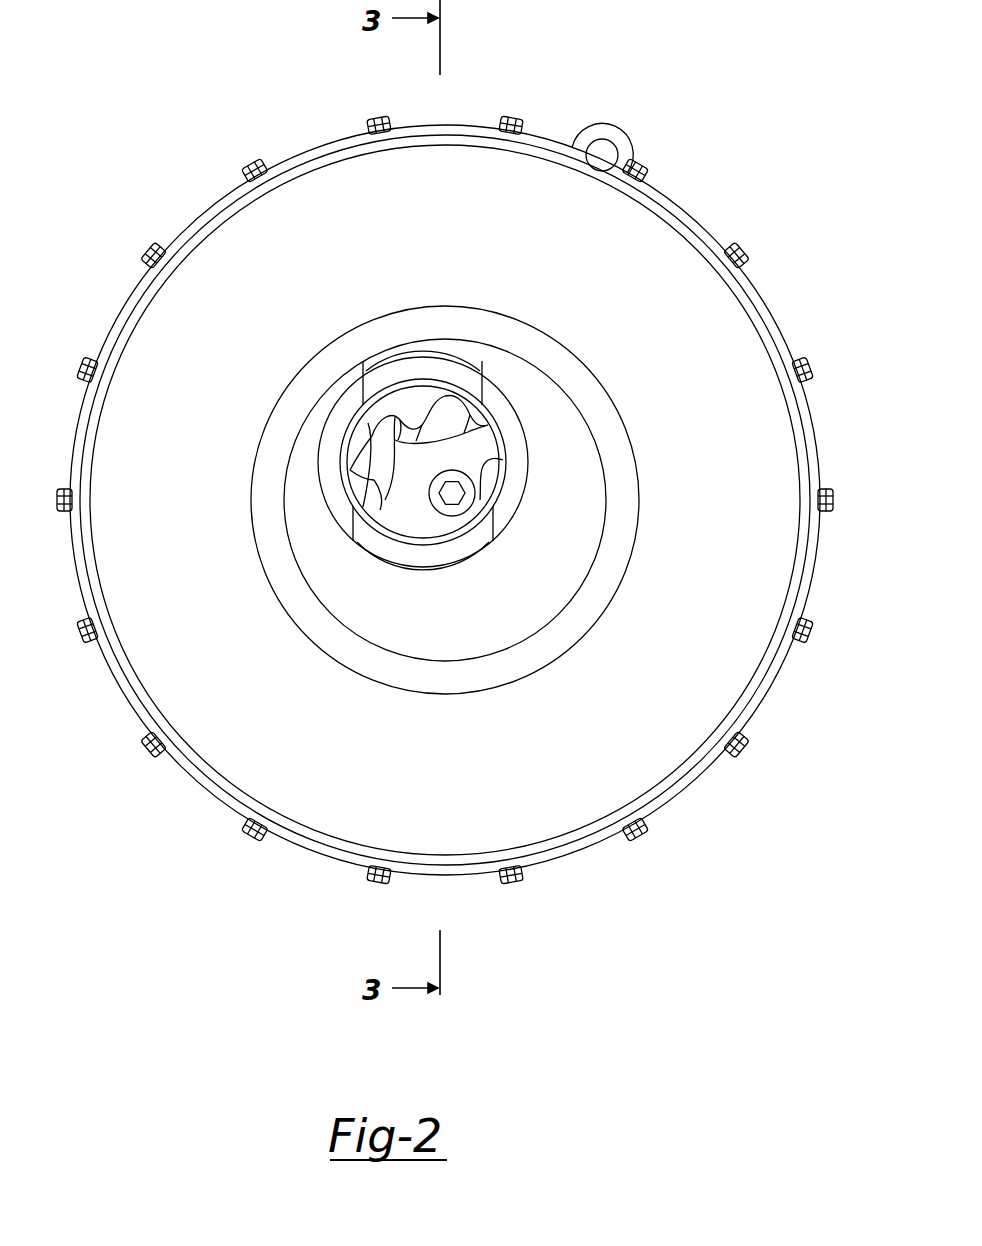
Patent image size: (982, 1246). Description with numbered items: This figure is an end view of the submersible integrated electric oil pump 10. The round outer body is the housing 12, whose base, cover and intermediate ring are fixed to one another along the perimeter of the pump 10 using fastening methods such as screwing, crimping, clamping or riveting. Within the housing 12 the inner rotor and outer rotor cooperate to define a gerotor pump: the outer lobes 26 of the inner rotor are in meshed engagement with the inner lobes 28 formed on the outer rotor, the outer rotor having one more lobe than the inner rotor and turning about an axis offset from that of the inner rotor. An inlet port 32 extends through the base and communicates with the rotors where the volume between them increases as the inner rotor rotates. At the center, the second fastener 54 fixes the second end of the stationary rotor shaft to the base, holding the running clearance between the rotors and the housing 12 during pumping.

The submersible integrated electric oil pump 10 is at (630, 77).
The housing 12 is at (712, 334).
The outer lobes 26 is at (382, 445).
The inner lobes 28 is at (402, 442).
The inlet port 32 is at (480, 500).
The second fastener 54 is at (440, 514).